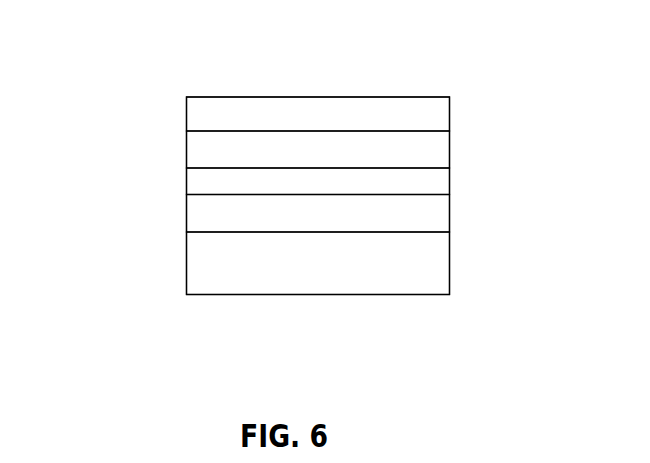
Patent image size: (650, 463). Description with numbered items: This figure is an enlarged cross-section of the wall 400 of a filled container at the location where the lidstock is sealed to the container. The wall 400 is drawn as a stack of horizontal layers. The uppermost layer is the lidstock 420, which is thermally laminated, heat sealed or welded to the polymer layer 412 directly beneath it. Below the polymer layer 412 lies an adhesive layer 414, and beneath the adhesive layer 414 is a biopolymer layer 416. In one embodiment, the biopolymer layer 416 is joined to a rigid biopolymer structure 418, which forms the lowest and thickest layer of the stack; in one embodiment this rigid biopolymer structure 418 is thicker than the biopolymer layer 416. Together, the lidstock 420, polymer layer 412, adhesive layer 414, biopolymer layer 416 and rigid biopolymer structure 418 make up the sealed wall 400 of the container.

The wall 400 is at (498, 210).
The lidstock 420 is at (186, 108).
The polymer layer 412 is at (186, 153).
The adhesive layer 414 is at (186, 178).
The biopolymer layer 416 is at (186, 215).
The rigid biopolymer structure 418 is at (186, 278).